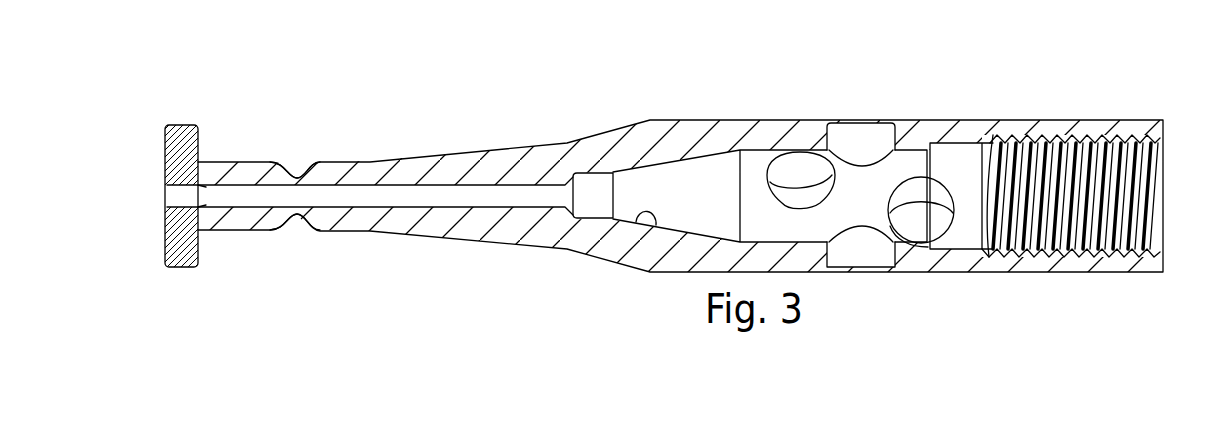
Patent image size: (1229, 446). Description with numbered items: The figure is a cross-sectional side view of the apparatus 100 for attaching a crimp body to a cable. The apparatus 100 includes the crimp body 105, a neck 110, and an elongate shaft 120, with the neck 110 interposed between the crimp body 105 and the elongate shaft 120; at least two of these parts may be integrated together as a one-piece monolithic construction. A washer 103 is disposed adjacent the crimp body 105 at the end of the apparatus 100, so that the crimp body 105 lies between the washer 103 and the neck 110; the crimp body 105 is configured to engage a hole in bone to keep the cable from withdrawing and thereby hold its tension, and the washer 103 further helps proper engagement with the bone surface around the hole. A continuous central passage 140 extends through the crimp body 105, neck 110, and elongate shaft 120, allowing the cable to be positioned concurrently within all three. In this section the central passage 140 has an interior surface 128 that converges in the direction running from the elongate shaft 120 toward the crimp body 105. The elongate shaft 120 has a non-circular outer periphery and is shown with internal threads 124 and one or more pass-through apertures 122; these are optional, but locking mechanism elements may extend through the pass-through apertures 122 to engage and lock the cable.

The apparatus 100 is at (207, 95).
The washer 103 is at (180, 138).
The crimp body 105 is at (248, 147).
The neck 110 is at (302, 166).
The elongate shaft 120 is at (980, 82).
The pass-through apertures 122 is at (870, 153).
The internal threads 124 is at (1133, 163).
The interior surface 128 is at (658, 167).
The central passage 140 is at (363, 197).